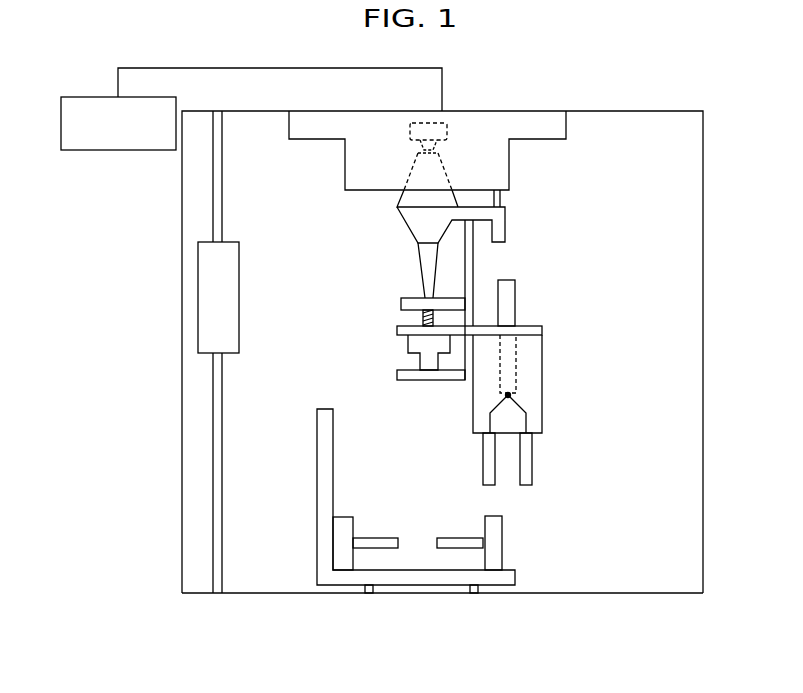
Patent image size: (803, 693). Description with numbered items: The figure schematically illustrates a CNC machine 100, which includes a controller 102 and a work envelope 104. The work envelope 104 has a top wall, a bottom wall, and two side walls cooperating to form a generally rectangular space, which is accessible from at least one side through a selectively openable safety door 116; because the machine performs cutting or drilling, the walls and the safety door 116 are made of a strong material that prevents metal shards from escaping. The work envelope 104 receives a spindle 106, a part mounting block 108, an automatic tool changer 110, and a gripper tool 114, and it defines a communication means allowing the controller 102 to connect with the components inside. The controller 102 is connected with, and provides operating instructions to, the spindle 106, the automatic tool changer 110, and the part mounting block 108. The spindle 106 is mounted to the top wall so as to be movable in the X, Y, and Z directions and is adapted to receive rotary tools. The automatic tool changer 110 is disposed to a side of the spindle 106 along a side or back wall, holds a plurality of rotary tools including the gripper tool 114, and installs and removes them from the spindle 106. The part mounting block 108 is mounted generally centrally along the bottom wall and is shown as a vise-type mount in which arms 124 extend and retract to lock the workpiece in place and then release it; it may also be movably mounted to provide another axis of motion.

The CNC machine 100 is at (604, 80).
The controller 102 is at (145, 150).
The work envelope 104 is at (664, 120).
The spindle 106 is at (547, 123).
The part mounting block 108 is at (321, 474).
The automatic tool changer 110 is at (252, 283).
The gripper tool 114 is at (556, 279).
The safety door 116 is at (670, 578).
The arms 124 is at (448, 516).